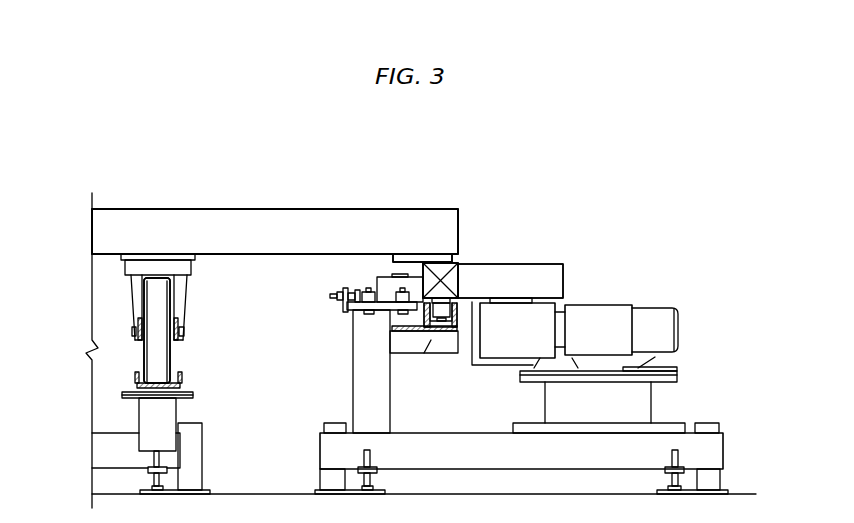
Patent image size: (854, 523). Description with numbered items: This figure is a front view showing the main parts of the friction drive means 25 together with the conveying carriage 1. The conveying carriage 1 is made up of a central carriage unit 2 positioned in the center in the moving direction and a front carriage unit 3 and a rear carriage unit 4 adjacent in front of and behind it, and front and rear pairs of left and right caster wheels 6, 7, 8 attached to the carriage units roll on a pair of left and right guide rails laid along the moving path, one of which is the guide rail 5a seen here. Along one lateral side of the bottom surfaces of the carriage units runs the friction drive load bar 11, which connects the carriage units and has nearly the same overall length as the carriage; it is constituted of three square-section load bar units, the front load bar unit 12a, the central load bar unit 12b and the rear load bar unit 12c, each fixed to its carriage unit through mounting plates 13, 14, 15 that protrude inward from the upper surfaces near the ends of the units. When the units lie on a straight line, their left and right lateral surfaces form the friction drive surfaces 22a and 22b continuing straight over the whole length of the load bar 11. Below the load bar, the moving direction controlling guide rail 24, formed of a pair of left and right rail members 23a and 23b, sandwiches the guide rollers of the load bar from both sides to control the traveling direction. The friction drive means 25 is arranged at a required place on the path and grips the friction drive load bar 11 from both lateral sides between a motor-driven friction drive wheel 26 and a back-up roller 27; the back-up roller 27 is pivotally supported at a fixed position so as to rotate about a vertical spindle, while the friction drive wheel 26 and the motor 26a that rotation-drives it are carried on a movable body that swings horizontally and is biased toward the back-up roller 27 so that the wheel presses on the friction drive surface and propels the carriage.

The conveying carriage 1 is at (176, 204).
The front carriage unit 3 is at (252, 223).
The central carriage unit 2 is at (275, 231).
The rear carriage unit 4 is at (275, 231).
The caster wheel 6 is at (163, 300).
The caster wheel 7 is at (157, 330).
The caster wheel 8 is at (157, 330).
The guide rail 5a is at (181, 382).
The back-up roller 27 is at (377, 280).
The friction drive surface 22b is at (423, 271).
The mounting plate 13 is at (412, 260).
The mounting plate 14 is at (422, 258).
The mounting plate 15 is at (422, 258).
The front load bar unit 12a is at (440, 262).
The central load bar unit 12b is at (440, 280).
The rear load bar unit 12c is at (440, 280).
The friction drive load bar 11 is at (467, 266).
The friction drive surface 22a is at (459, 285).
The friction drive wheel 26 is at (556, 283).
The friction drive means 25 is at (640, 292).
The motor 26a is at (669, 323).
The rail member 23b is at (424, 312).
The moving direction controlling guide rail 24 is at (438, 341).
The rail member 23a is at (458, 313).